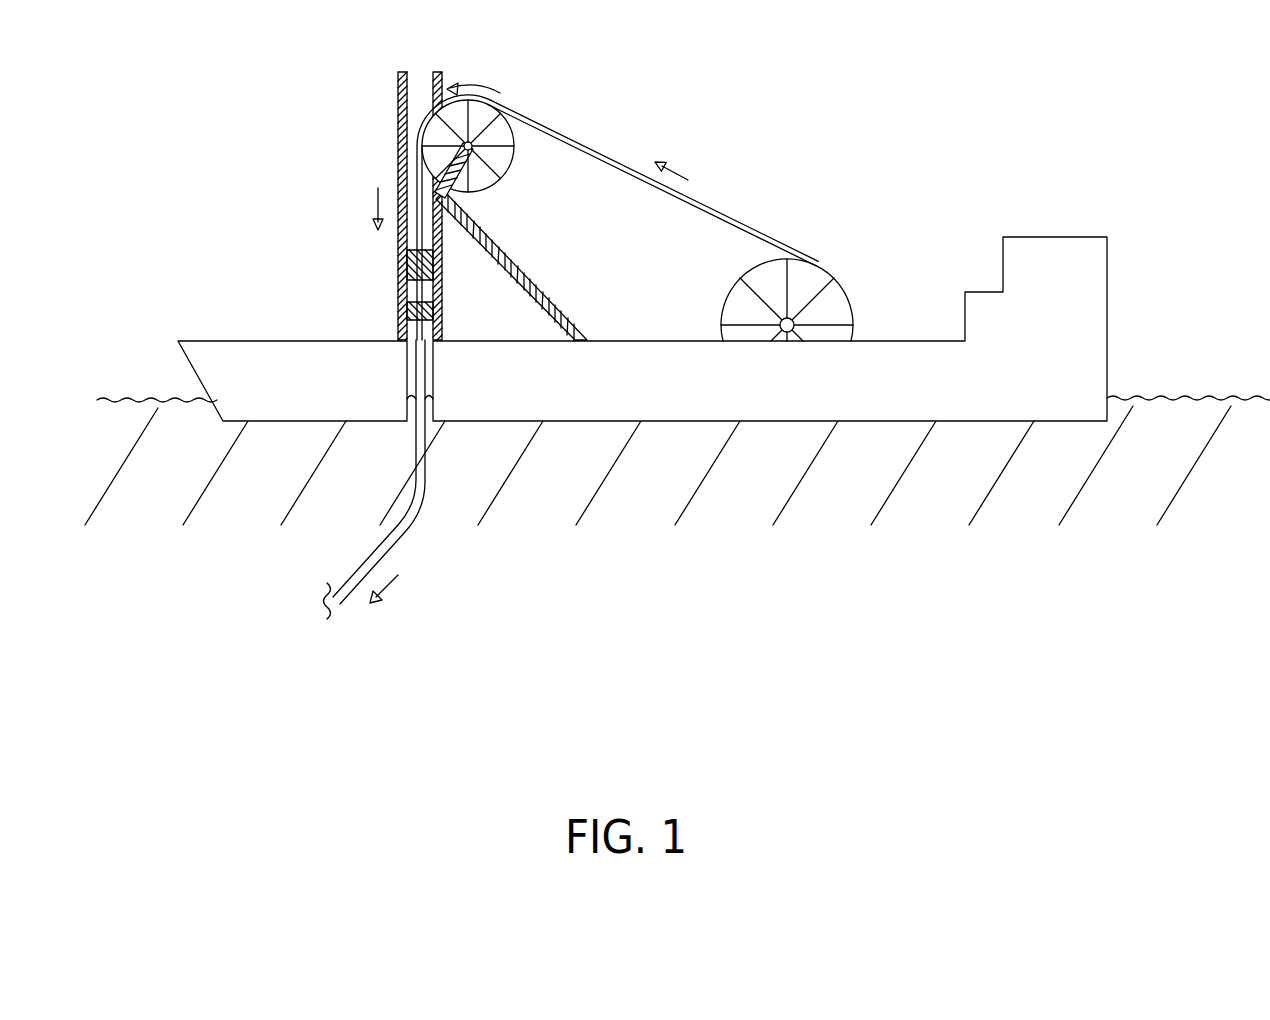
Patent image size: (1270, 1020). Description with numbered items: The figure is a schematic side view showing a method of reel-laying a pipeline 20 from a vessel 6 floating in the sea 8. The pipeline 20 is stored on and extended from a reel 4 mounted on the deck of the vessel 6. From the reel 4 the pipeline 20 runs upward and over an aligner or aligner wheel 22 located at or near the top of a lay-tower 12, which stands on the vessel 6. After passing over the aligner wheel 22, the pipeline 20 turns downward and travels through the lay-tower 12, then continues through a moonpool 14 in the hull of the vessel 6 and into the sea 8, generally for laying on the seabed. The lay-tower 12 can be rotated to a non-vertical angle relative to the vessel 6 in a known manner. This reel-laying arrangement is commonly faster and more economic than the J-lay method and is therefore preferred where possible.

The reel 4 is at (845, 293).
The vessel 6 is at (1039, 387).
The sea 8 is at (719, 573).
The lay-tower 12 is at (400, 112).
The moonpool 14 is at (407, 383).
The pipeline 20 is at (722, 222).
The aligner wheel 22 is at (507, 168).